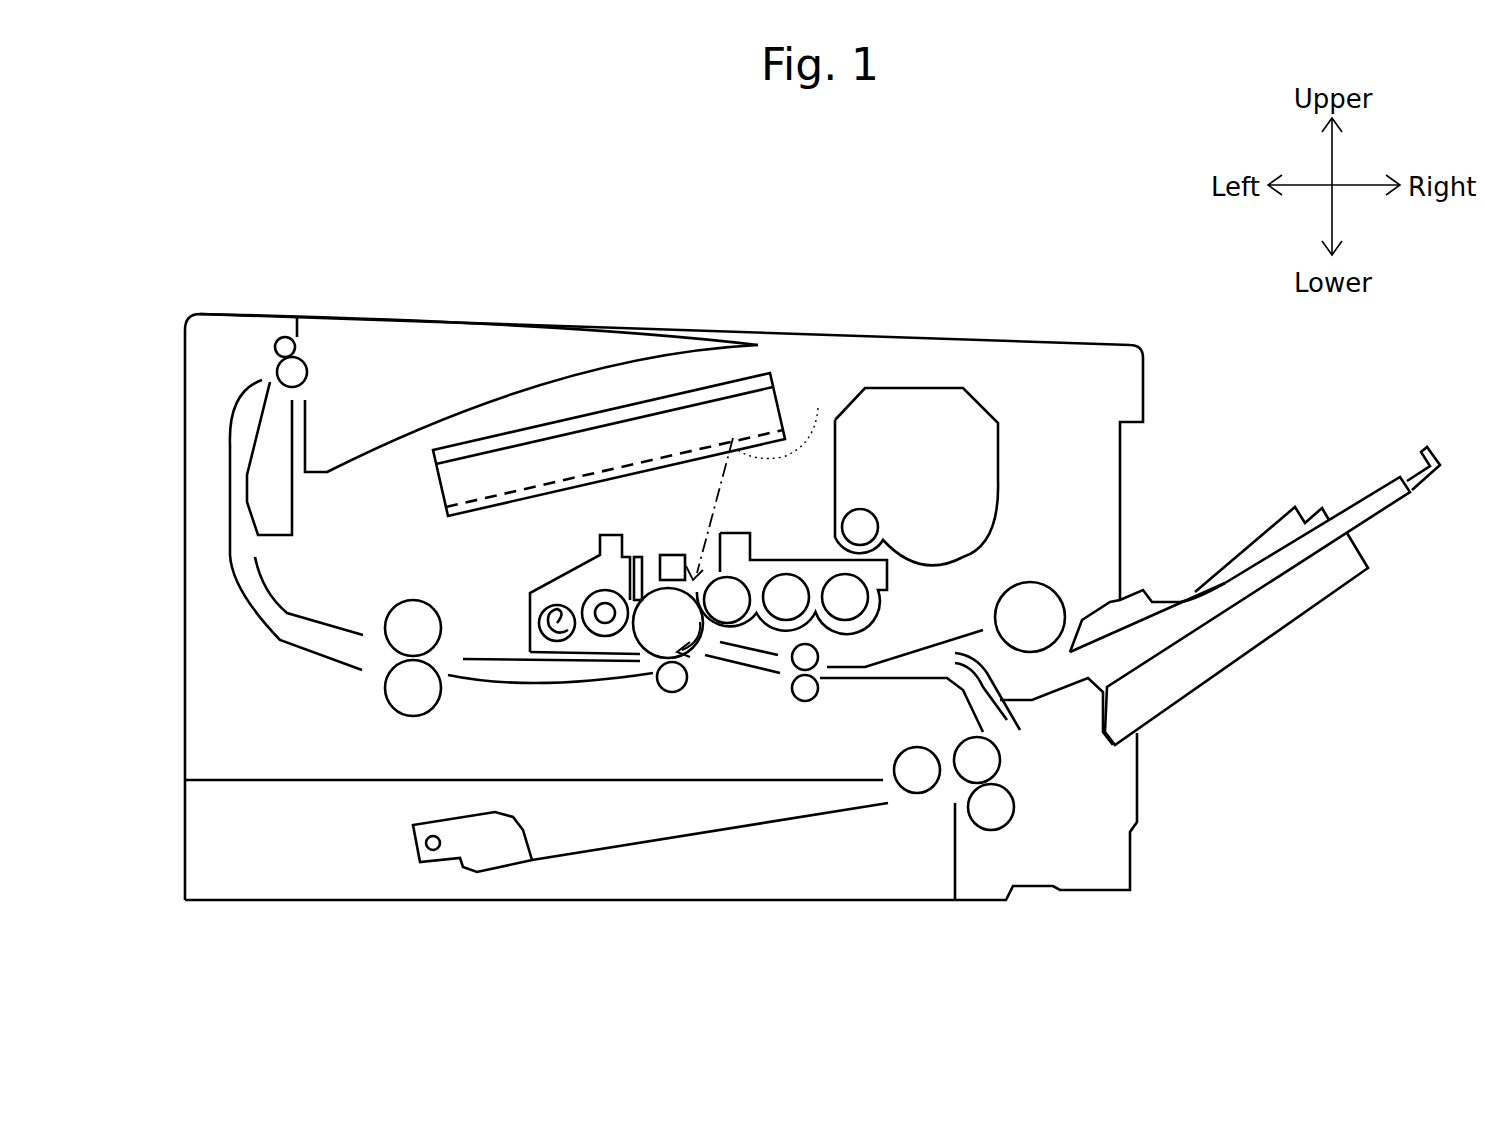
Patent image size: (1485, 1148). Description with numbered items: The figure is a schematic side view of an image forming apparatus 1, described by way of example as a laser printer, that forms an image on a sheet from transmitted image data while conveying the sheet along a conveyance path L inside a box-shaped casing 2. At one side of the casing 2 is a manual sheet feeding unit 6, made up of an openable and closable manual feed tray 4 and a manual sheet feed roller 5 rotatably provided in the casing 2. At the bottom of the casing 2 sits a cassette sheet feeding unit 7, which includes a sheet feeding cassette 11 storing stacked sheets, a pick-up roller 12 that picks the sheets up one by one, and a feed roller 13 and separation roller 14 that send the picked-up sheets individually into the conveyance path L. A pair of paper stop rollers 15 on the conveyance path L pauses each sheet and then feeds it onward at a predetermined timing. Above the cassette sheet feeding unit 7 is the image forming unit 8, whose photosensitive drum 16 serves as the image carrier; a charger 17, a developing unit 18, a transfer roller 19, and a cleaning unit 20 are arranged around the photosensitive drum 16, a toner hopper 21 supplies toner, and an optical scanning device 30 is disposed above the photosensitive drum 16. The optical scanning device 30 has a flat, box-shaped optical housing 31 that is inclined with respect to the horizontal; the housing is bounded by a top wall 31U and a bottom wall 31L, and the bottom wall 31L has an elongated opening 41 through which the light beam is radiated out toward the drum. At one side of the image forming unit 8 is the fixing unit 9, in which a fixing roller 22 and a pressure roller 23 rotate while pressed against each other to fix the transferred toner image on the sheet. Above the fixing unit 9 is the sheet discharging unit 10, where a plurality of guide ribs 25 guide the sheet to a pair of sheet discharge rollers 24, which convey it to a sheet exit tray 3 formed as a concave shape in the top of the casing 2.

The image forming apparatus 1 is at (619, 506).
The casing 2 is at (185, 620).
The sheet exit tray 3 is at (413, 413).
The manual feed tray 4 is at (1358, 510).
The manual sheet feed roller 5 is at (1038, 590).
The manual sheet feeding unit 6 is at (1258, 441).
The cassette sheet feeding unit 7 is at (1047, 775).
The image forming unit 8 is at (762, 525).
The fixing unit 9 is at (365, 688).
The sheet discharging unit 10 is at (248, 346).
The sheet feeding cassette 11 is at (778, 822).
The pick-up roller 12 is at (917, 790).
The feed roller 13 is at (990, 758).
The separation roller 14 is at (1000, 817).
The pair of paper stop rollers 15 is at (817, 667).
The photosensitive drum 16 is at (698, 643).
The charger 17 is at (673, 557).
The developing unit 18 is at (880, 607).
The transfer roller 19 is at (677, 688).
The cleaning unit 20 is at (550, 590).
The toner hopper 21 is at (918, 393).
The fixing roller 22 is at (415, 602).
The pressure roller 23 is at (403, 703).
The pair of sheet discharge rollers 24 is at (304, 364).
The guide ribs 25 is at (287, 517).
The optical scanning device 30 is at (517, 426).
The optical housing 31 is at (630, 384).
The top wall 31U is at (720, 390).
The bottom wall 31L is at (783, 432).
The opening 41 is at (764, 481).
The conveyance path L is at (530, 683).